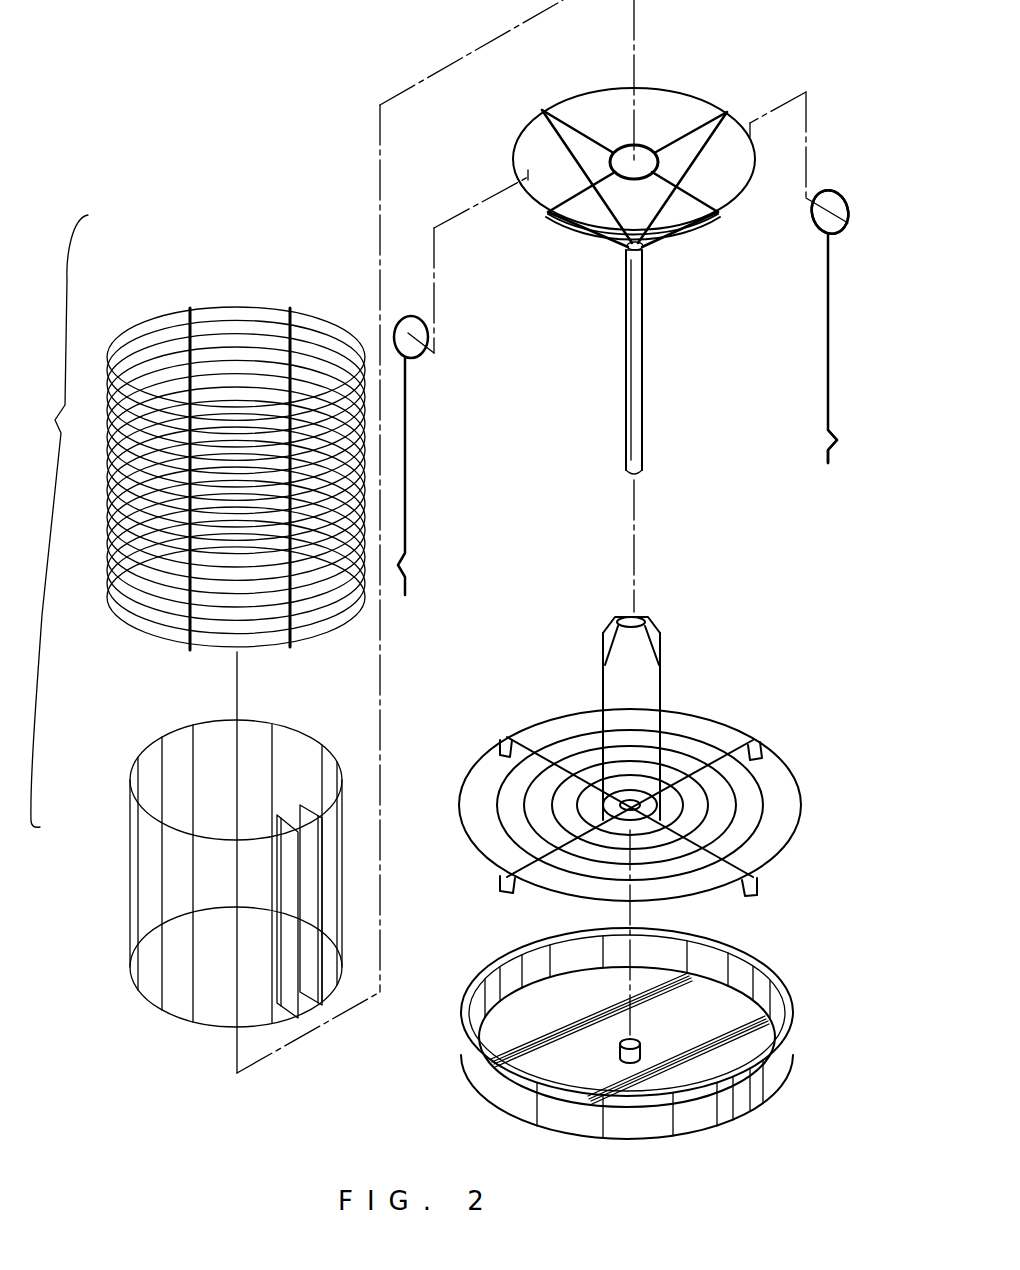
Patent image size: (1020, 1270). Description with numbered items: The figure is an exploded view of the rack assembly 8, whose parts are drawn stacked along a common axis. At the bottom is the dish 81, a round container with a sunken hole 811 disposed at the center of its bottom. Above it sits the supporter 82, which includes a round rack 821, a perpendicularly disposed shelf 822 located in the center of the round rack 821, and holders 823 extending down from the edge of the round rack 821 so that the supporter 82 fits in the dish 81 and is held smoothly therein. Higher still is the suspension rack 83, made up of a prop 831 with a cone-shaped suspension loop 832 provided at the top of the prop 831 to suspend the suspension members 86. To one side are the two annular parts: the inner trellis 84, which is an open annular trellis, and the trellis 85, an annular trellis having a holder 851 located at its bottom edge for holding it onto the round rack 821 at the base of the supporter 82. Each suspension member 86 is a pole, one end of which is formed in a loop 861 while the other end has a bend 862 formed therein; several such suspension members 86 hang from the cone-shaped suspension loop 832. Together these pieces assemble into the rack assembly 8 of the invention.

The rack assembly 8 is at (59, 521).
The dish 81 is at (654, 1033).
The sunken hole 811 is at (641, 1053).
The supporter 82 is at (661, 759).
The round rack 821 is at (763, 797).
The shelf 822 is at (661, 665).
The holders 823 is at (760, 887).
The suspension rack 83 is at (657, 256).
The prop 831 is at (636, 351).
The cone-shaped suspension loop 832 is at (708, 108).
The inner trellis 84 is at (130, 835).
The trellis 85 is at (222, 458).
The holder 851 is at (142, 628).
The suspension members 86 is at (406, 463).
The loop 861 is at (844, 194).
The bend 862 is at (838, 438).